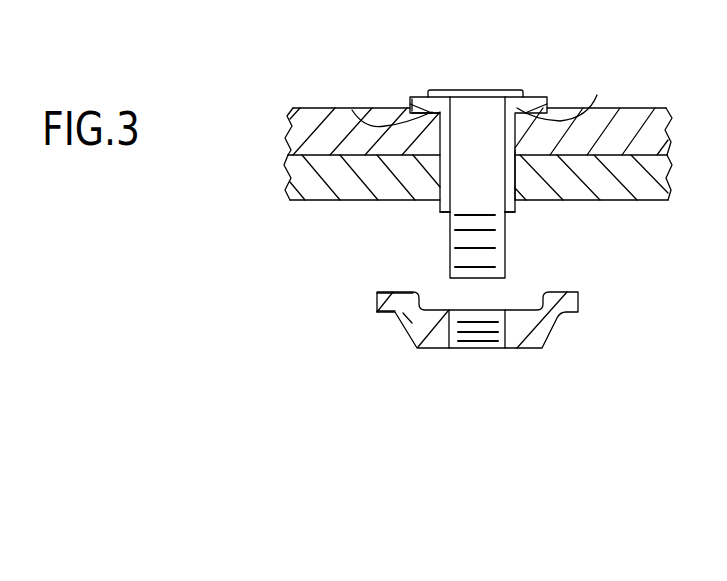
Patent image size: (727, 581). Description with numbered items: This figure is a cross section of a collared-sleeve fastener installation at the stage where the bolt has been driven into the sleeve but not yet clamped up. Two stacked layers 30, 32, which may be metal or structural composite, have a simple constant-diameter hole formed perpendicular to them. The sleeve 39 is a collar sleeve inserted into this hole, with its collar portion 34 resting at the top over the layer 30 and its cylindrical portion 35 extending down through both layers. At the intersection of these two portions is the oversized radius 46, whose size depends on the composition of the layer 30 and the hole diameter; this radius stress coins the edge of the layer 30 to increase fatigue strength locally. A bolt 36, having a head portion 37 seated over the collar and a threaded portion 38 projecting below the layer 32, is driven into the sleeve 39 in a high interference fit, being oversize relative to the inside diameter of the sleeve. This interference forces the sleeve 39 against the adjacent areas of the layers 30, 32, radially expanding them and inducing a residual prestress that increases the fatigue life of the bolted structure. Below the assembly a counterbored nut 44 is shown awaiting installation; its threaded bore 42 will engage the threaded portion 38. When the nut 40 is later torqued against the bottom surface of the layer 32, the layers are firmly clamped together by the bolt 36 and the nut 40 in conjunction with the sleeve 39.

The layer 30 is at (288, 134).
The layer 32 is at (283, 184).
The collar portion 34 is at (538, 97).
The cylindrical portion 35 is at (512, 212).
The bolt 36 is at (487, 90).
The head portion 37 is at (428, 97).
The threaded portion 38 is at (449, 246).
The sleeve 39 is at (515, 173).
The nut 40 is at (546, 340).
The nut threaded bore 42 is at (465, 348).
The counterbored nut 44 is at (418, 292).
The oversized radius 46 is at (352, 110).